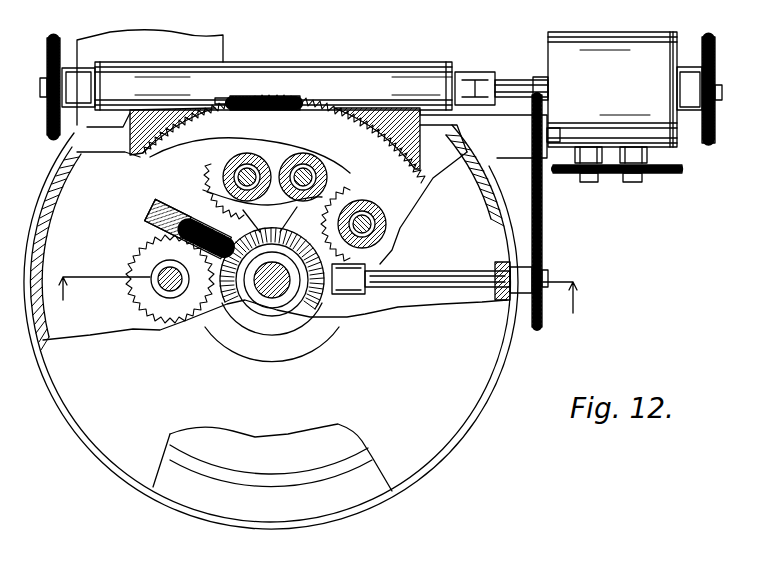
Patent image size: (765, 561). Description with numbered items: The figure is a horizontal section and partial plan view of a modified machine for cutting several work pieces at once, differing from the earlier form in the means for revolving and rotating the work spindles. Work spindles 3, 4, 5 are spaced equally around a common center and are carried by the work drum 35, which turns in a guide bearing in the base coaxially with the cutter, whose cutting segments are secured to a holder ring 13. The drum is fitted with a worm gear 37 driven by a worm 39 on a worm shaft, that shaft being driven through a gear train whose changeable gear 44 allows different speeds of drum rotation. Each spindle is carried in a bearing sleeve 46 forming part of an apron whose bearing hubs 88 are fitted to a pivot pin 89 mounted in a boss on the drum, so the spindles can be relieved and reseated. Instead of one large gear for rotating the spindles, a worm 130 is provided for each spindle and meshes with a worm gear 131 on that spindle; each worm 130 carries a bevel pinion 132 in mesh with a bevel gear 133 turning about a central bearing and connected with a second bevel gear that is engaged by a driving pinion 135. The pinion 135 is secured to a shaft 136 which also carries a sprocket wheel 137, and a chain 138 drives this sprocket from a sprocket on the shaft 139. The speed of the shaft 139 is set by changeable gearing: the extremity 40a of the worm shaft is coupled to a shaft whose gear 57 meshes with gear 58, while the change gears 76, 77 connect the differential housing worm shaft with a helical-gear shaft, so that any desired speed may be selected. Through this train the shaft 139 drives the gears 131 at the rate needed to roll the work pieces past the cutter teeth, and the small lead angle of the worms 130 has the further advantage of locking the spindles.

The work spindle 3 is at (167, 283).
The work spindle 4 is at (237, 167).
The work spindle 5 is at (382, 210).
The holder ring 13 is at (319, 314).
The work drum 35 is at (212, 190).
The worm gear 37 is at (163, 147).
The worm 39 is at (283, 105).
The extremity of shaft 40a is at (500, 82).
The gear 44 is at (48, 124).
The bearing sleeve 46 is at (262, 168).
The gear 57 is at (712, 87).
The gear 58 is at (715, 127).
The gear 76 is at (668, 174).
The gear 77 is at (600, 182).
The bearing hub 88 is at (320, 178).
The pivot pin 89 is at (305, 177).
The worm 130 is at (188, 208).
The worm gear 131 is at (140, 260).
The bevel pinion 132 is at (174, 289).
The bevel gear 133 is at (225, 303).
The driving pinion 135 is at (333, 310).
The shaft 136 is at (428, 288).
The sprocket wheel 137 is at (540, 266).
The chain 138 is at (542, 203).
The shaft 139 is at (541, 77).